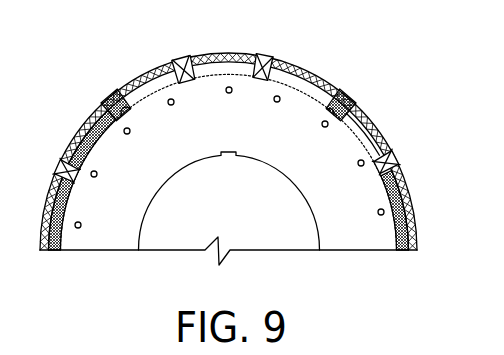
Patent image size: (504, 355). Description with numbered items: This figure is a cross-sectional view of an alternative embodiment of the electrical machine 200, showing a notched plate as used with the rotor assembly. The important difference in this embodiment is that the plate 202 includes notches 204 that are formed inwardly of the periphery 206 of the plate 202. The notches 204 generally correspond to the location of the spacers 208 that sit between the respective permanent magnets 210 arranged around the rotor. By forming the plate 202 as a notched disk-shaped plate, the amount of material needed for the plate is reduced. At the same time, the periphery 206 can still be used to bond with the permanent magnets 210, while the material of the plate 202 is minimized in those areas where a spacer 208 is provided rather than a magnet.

The electrical machine 200 is at (241, 154).
The plate 202 is at (355, 252).
The notches 204 is at (127, 88).
The periphery 206 is at (80, 130).
The spacers 208 is at (178, 60).
The permanent magnets 210 is at (217, 62).